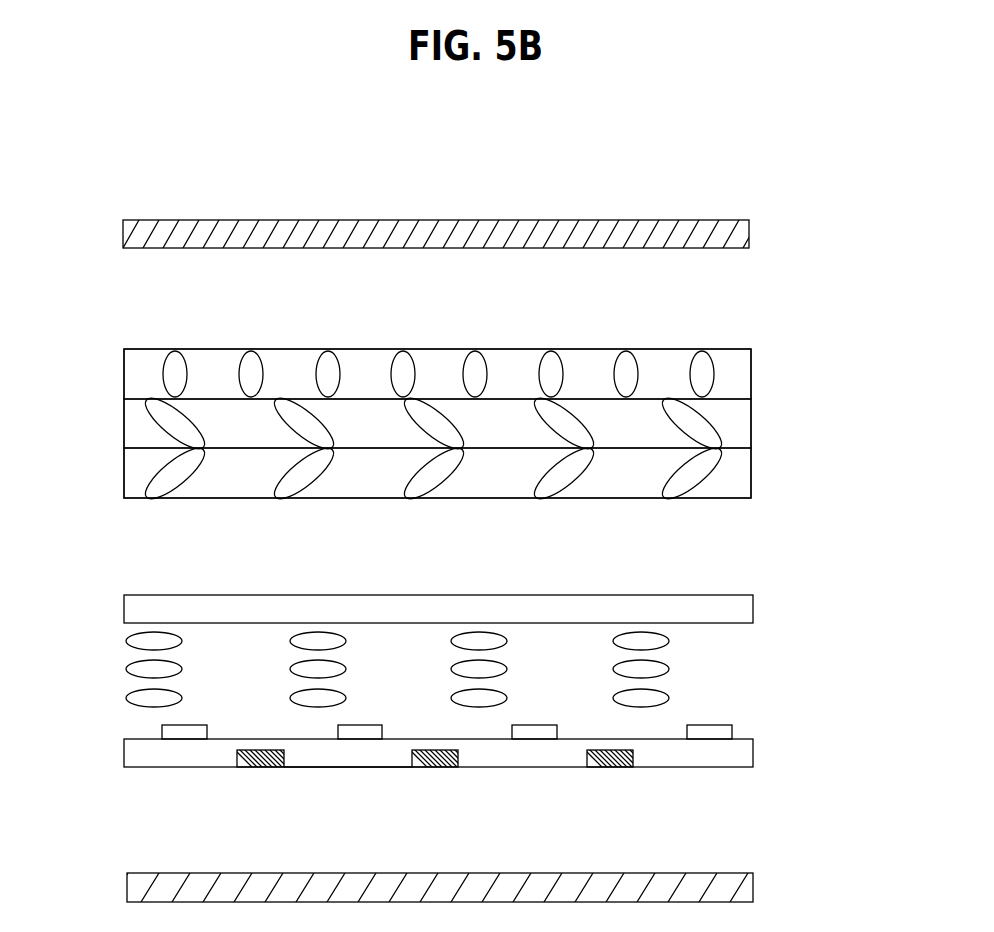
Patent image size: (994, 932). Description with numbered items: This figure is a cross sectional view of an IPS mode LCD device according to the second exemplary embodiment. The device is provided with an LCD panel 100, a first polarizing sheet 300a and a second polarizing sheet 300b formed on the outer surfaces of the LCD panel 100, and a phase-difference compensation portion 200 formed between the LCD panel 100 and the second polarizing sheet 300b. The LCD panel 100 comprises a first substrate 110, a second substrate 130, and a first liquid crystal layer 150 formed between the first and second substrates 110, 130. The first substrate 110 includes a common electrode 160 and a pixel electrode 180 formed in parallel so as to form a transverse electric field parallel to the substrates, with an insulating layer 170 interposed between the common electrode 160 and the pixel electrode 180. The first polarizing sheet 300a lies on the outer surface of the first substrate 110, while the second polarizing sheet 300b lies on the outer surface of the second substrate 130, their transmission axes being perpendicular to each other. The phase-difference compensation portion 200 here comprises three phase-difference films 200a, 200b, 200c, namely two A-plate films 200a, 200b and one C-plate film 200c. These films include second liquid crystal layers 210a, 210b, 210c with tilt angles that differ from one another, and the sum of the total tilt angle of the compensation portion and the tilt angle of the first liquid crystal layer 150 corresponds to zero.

The second polarizing sheet 300b is at (745, 232).
The first polarizing sheet 300a is at (745, 887).
The phase-difference compensation portion 200 is at (477, 427).
The phase-difference film 200c is at (441, 374).
The phase-difference film 200b is at (448, 424).
The phase-difference film 200a is at (448, 474).
The second liquid crystal layer 210c is at (170, 370).
The second liquid crystal layer 210b is at (165, 418).
The second liquid crystal layer 210a is at (165, 482).
The LCD panel 100 is at (480, 720).
The second substrate 130 is at (745, 607).
The first liquid crystal layer 150 is at (657, 667).
The first substrate 110 is at (745, 752).
The pixel electrode 180 is at (168, 733).
The common electrode 160 is at (262, 768).
The insulating layer 170 is at (366, 752).